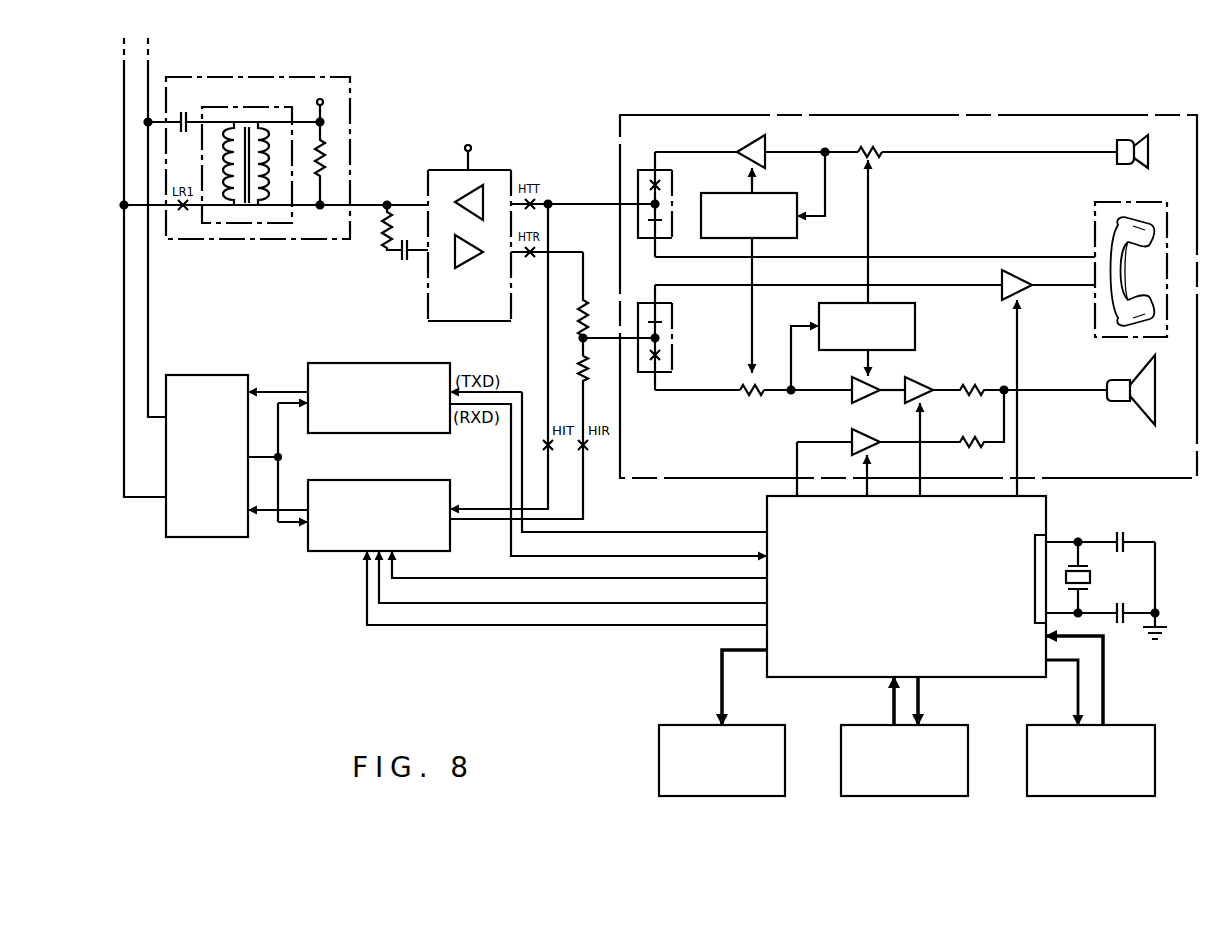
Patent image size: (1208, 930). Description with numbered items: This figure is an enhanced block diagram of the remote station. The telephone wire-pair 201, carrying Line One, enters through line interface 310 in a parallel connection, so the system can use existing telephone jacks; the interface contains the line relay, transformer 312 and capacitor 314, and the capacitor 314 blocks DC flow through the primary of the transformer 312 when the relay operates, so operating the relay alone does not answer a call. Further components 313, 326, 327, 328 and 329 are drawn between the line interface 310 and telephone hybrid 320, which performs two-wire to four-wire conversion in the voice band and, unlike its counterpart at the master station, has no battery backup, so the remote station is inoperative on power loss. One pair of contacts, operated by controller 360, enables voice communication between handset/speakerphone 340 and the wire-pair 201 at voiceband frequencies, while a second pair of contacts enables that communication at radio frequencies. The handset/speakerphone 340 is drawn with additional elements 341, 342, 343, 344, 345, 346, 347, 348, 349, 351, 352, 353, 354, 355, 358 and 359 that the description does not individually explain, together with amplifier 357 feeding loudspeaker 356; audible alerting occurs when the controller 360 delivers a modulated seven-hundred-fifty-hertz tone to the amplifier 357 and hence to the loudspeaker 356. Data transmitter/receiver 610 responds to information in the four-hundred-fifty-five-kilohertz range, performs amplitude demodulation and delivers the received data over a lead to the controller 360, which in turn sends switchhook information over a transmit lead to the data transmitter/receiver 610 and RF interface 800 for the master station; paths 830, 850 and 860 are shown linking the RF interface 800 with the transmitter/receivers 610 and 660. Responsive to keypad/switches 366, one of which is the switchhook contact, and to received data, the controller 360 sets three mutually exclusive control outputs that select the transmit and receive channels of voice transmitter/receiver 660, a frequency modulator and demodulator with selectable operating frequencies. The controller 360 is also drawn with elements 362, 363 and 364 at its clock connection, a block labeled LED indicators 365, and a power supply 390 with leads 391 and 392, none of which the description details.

The wire-pair 201 is at (116, 74).
The line interface 310 is at (312, 78).
The transformer 312 is at (250, 110).
The resistor 313 is at (328, 156).
The capacitor 314 is at (188, 110).
The telephone hybrid 320 is at (488, 170).
The resistor 326 is at (383, 240).
The capacitor 327 is at (405, 262).
The resistor 328 is at (578, 312).
The resistor 329 is at (578, 372).
The handset/speakerphone 340 is at (980, 115).
The hook switch 341 is at (674, 182).
The amplifier 342 is at (742, 142).
The resistor 343 is at (875, 148).
The receiver 344 is at (1117, 142).
The control circuit 345 is at (765, 193).
The handset 346 is at (1110, 203).
The switch 347 is at (674, 314).
The amplifier 348 is at (1025, 292).
The control circuit 349 is at (917, 325).
The variable resistor 351 is at (748, 400).
The amplifier 352 is at (858, 398).
The amplifier 353 is at (912, 398).
The resistor 354 is at (972, 386).
The speaker control line 355 is at (923, 466).
The loudspeaker 356 is at (1135, 372).
The amplifier 357 is at (858, 448).
The resistor 358 is at (972, 438).
The ring control line 359 is at (868, 468).
The controller 360 is at (1048, 515).
The capacitor 362 is at (1125, 535).
The capacitor 363 is at (1122, 625).
The crystal 364 is at (1095, 577).
The LED indicators 365 is at (765, 725).
The keypad/switches 366 is at (950, 725).
The power supply 390 is at (1135, 725).
The power line 391 is at (1078, 680).
The power control line 392 is at (1103, 690).
The data transmitter/receiver 610 is at (385, 363).
The voice transmitter/receiver 660 is at (385, 480).
The RF interface 800 is at (185, 375).
The signal line 830 is at (280, 455).
The signal line 850 is at (268, 515).
The signal line 860 is at (275, 390).